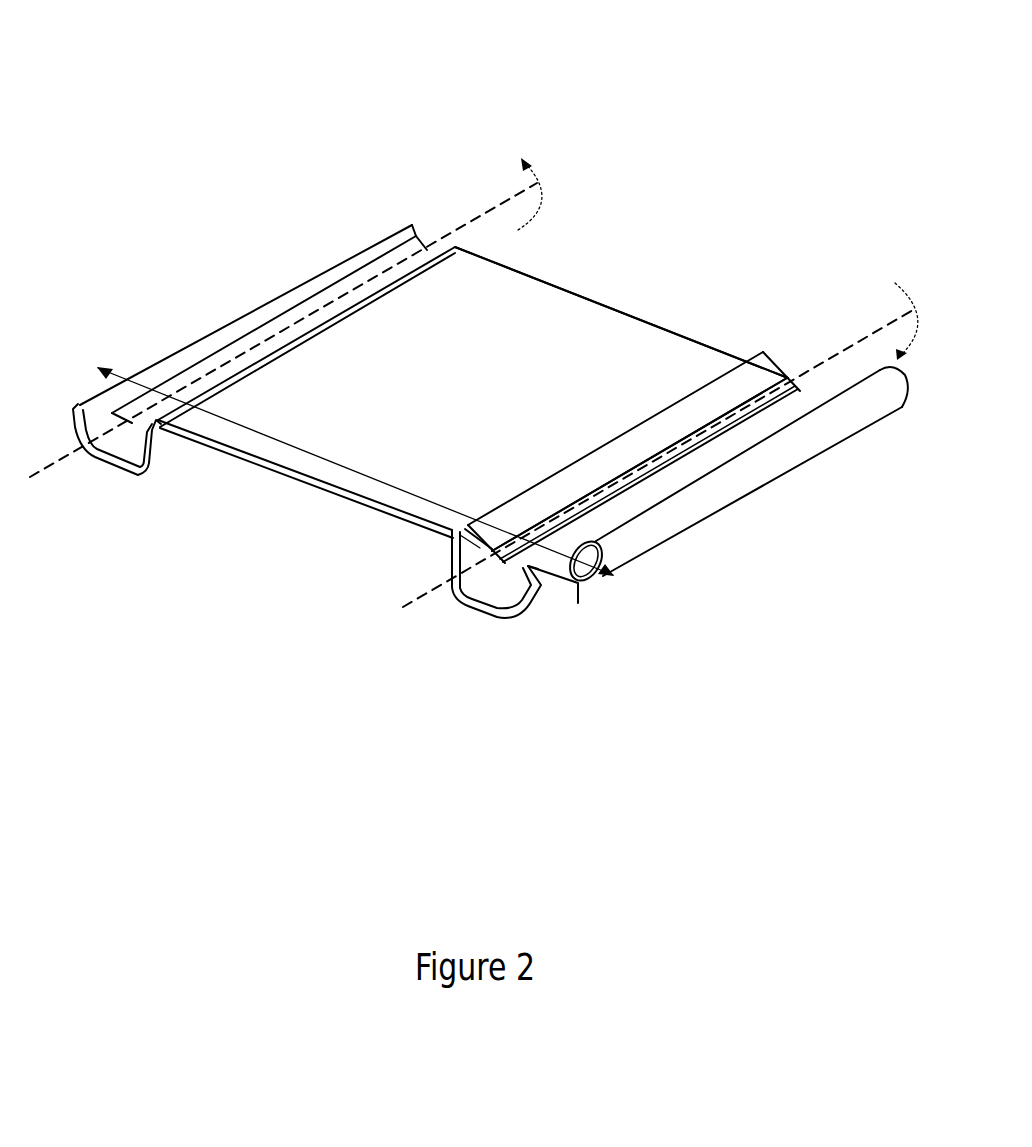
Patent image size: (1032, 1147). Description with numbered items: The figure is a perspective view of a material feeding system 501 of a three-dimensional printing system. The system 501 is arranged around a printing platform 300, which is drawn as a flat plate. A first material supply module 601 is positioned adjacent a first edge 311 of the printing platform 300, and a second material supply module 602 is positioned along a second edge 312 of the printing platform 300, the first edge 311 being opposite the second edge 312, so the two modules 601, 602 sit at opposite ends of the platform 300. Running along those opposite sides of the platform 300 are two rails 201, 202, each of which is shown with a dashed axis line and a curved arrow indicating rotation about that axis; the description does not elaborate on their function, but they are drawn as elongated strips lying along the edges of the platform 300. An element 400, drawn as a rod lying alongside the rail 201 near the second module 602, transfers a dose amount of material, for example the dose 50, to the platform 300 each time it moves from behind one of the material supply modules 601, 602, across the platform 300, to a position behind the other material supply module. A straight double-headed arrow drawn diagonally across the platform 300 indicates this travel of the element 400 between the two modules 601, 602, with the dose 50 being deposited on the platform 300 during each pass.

The material feeding system 501 is at (187, 56).
The second hinge rail 202 is at (414, 241).
The first hinge rail 201 is at (790, 386).
The first edge 311 is at (430, 260).
The second edge 312 is at (670, 403).
The printing platform 300 is at (300, 478).
The dose 50 is at (452, 553).
The element 400 is at (707, 517).
The first material supply module 601 is at (122, 477).
The second material supply module 602 is at (507, 622).